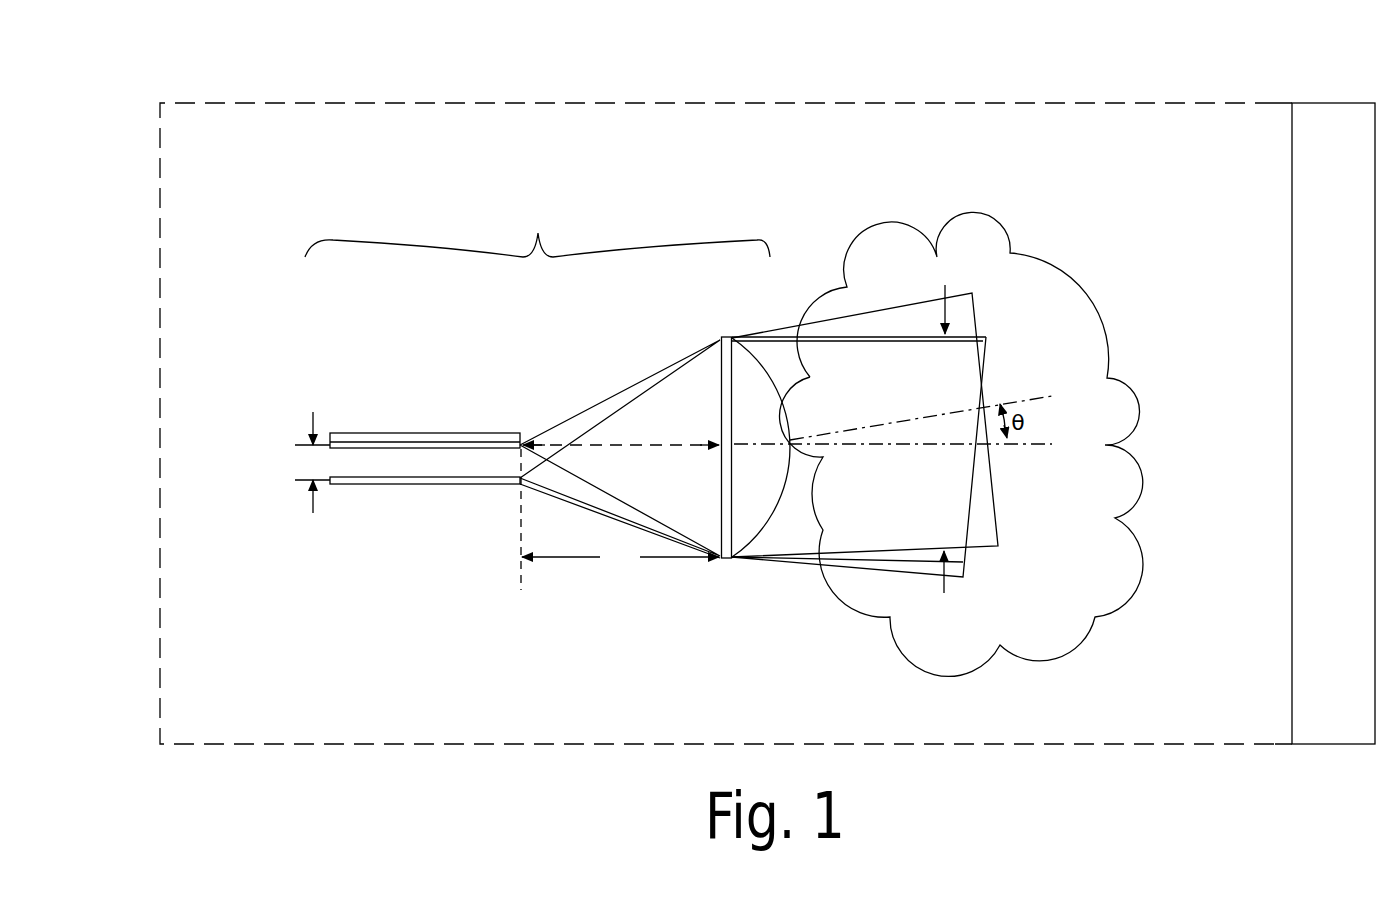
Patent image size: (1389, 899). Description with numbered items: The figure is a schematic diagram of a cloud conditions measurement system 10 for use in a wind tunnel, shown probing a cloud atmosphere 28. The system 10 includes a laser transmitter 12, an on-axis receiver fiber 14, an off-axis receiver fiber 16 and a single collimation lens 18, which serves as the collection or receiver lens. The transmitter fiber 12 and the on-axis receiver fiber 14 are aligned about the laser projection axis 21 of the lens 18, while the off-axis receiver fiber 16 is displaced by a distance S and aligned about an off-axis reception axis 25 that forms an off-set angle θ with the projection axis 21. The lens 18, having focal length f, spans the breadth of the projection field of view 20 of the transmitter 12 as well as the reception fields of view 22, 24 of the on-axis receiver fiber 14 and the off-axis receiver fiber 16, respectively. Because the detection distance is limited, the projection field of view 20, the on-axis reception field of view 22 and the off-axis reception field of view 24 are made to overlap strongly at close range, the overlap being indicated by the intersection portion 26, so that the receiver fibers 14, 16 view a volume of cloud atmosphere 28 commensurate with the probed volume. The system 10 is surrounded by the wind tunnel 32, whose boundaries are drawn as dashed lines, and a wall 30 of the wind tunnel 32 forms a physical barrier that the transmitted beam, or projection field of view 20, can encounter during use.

The cloud conditions measurement system 10 is at (538, 236).
The laser transmitter 12 is at (369, 444).
The on-axis receiver fiber 14 is at (358, 433).
The off-axis receiver fiber 16 is at (343, 481).
The single collimation lens 18 is at (722, 336).
The projection field of view 20 is at (806, 562).
The laser projection axis 21 is at (1044, 443).
The on-axis reception field of view 22 is at (970, 557).
The off-axis reception field of view 24 is at (784, 324).
The off-axis reception axis 25 is at (1027, 400).
The intersection portion 26 is at (965, 438).
The cloud atmosphere 28 is at (1071, 272).
The wall 30 is at (1327, 130).
The wind tunnel 32 is at (982, 102).